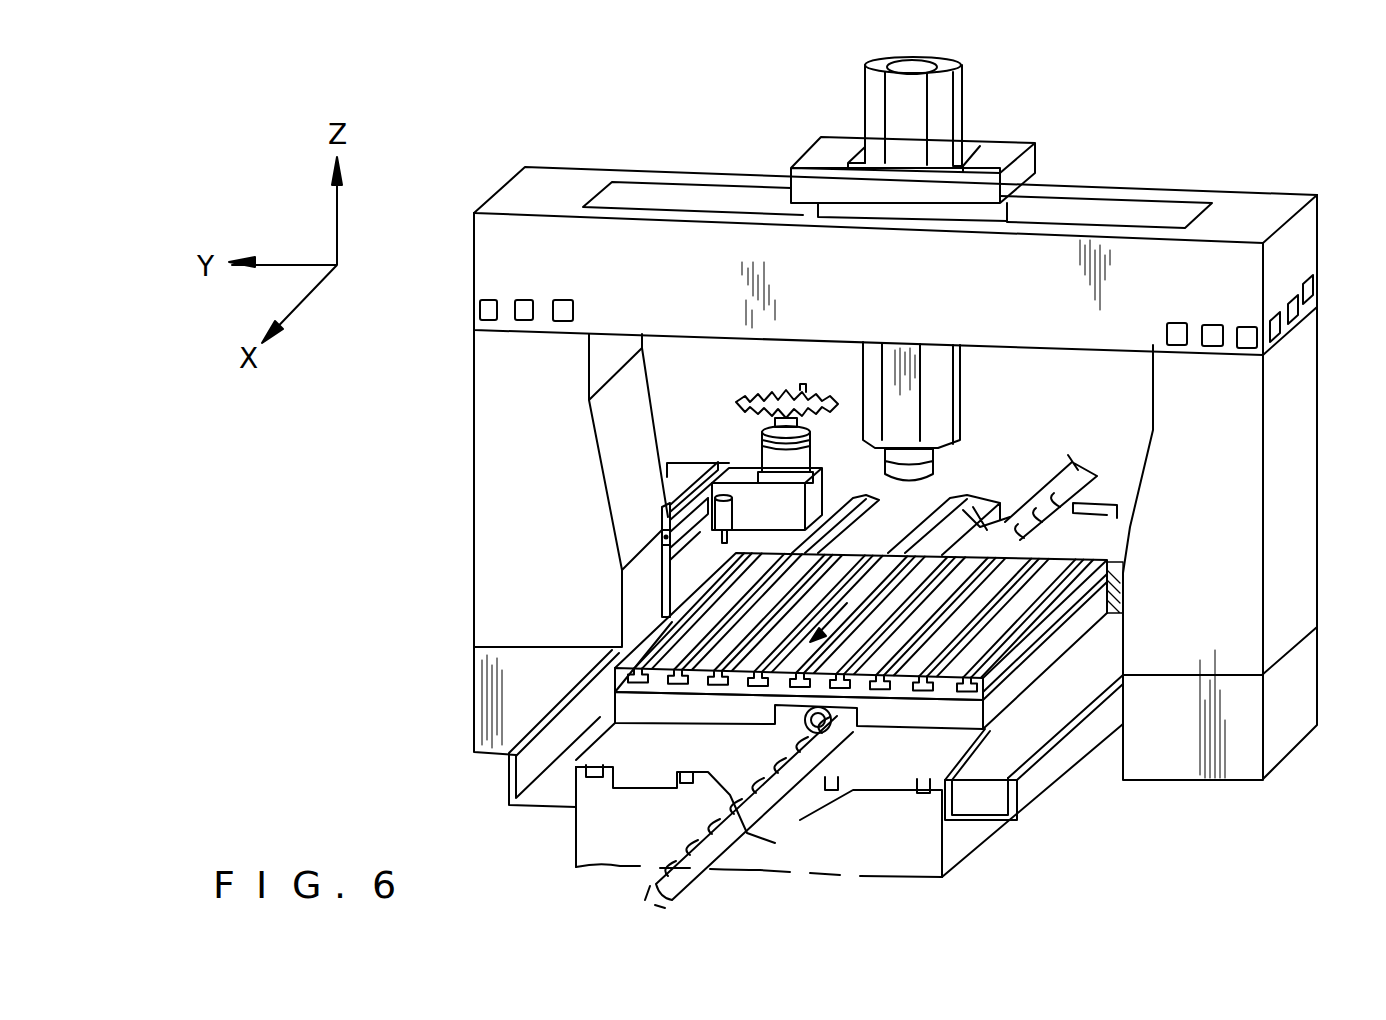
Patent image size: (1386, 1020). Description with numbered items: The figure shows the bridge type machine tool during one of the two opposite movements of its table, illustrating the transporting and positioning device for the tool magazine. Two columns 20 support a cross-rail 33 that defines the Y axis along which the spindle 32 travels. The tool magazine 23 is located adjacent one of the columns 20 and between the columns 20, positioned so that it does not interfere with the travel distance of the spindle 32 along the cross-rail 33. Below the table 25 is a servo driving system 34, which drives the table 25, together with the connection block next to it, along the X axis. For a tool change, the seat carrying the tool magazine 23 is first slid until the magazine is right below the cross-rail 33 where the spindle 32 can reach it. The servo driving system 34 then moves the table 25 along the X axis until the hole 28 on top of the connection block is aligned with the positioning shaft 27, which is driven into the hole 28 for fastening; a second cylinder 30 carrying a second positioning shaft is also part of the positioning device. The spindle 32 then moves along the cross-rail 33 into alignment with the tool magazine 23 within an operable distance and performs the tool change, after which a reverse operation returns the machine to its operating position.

The column 20 is at (498, 433).
The tool magazine 23 is at (742, 388).
The table 25 is at (987, 637).
The positioning shaft 27 is at (670, 539).
The hole 28 is at (733, 555).
The second cylinder 30 is at (681, 470).
The spindle 32 is at (943, 116).
The cross-rail 33 is at (1240, 215).
The servo driving system 34 is at (757, 797).